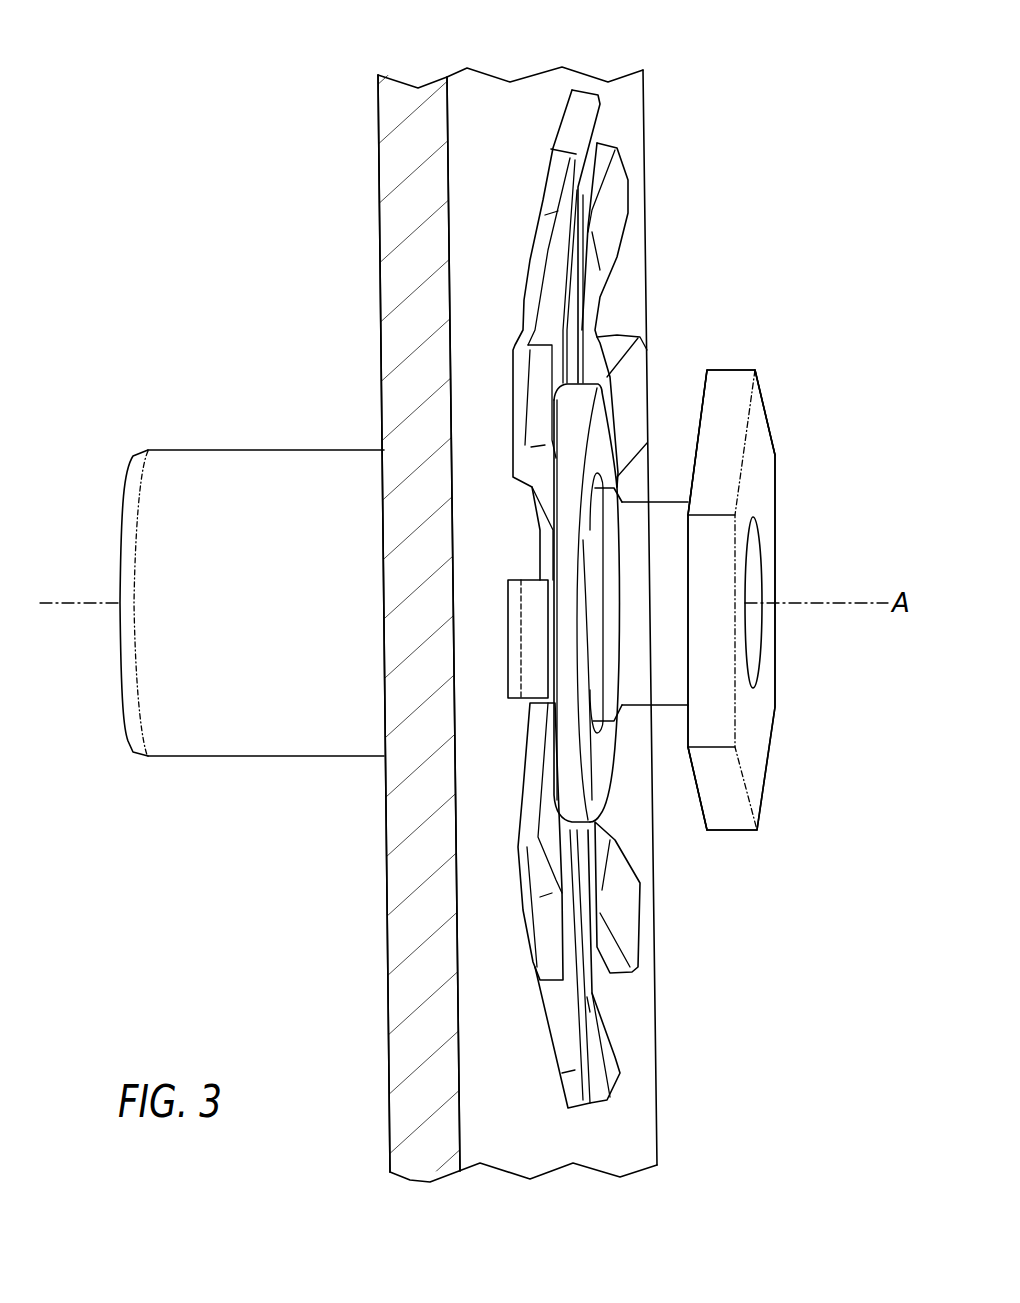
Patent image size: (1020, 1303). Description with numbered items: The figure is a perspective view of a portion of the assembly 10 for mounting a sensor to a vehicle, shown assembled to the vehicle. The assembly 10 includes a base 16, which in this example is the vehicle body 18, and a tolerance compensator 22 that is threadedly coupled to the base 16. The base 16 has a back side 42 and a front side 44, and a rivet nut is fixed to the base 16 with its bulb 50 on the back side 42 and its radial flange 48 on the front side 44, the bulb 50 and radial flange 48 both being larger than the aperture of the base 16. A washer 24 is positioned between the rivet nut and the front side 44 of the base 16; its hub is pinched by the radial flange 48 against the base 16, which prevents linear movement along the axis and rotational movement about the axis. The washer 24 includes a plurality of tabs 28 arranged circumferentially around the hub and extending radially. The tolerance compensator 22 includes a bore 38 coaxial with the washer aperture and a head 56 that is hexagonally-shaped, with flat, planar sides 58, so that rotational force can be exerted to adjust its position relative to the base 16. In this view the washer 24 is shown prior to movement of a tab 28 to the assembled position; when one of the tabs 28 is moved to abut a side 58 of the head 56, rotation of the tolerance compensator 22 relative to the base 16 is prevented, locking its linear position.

The assembly 10 is at (834, 177).
The base 16 is at (633, 1035).
The vehicle body 18 is at (650, 617).
The tolerance compensator 22 is at (750, 748).
The washer 24 is at (530, 789).
The tabs 28 is at (593, 110).
The bore 38 is at (760, 628).
The back side 42 is at (377, 153).
The front side 44 is at (470, 156).
The radial flange 48 is at (598, 787).
The bulb 50 is at (232, 448).
The head 56 is at (762, 708).
The sides 58 is at (718, 535).